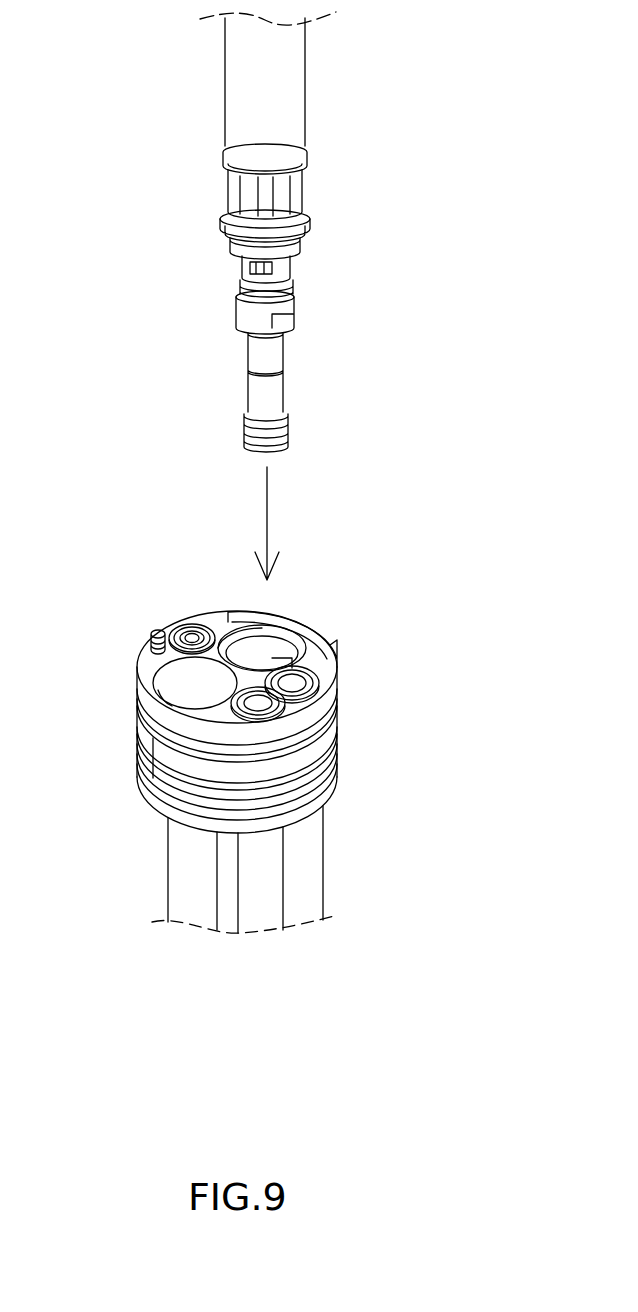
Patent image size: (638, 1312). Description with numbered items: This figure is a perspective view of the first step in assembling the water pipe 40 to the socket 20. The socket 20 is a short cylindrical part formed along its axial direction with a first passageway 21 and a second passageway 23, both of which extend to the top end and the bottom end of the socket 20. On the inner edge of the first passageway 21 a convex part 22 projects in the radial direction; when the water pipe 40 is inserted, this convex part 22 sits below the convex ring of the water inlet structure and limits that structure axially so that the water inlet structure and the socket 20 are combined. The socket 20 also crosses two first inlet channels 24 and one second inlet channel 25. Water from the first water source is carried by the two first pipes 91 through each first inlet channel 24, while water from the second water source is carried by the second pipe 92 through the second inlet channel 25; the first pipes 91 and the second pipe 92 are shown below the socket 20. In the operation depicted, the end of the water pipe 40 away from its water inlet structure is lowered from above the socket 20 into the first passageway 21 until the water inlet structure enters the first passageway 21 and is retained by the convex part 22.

The socket 20 is at (138, 697).
The first passageway 21 is at (247, 630).
The convex part 22 is at (277, 633).
The second passageway 23 is at (162, 678).
The first inlet channel 24 is at (283, 677).
The second inlet channel 25 is at (190, 637).
The water pipe 40 is at (305, 88).
The first pipe 91 is at (323, 838).
The second pipe 92 is at (167, 853).